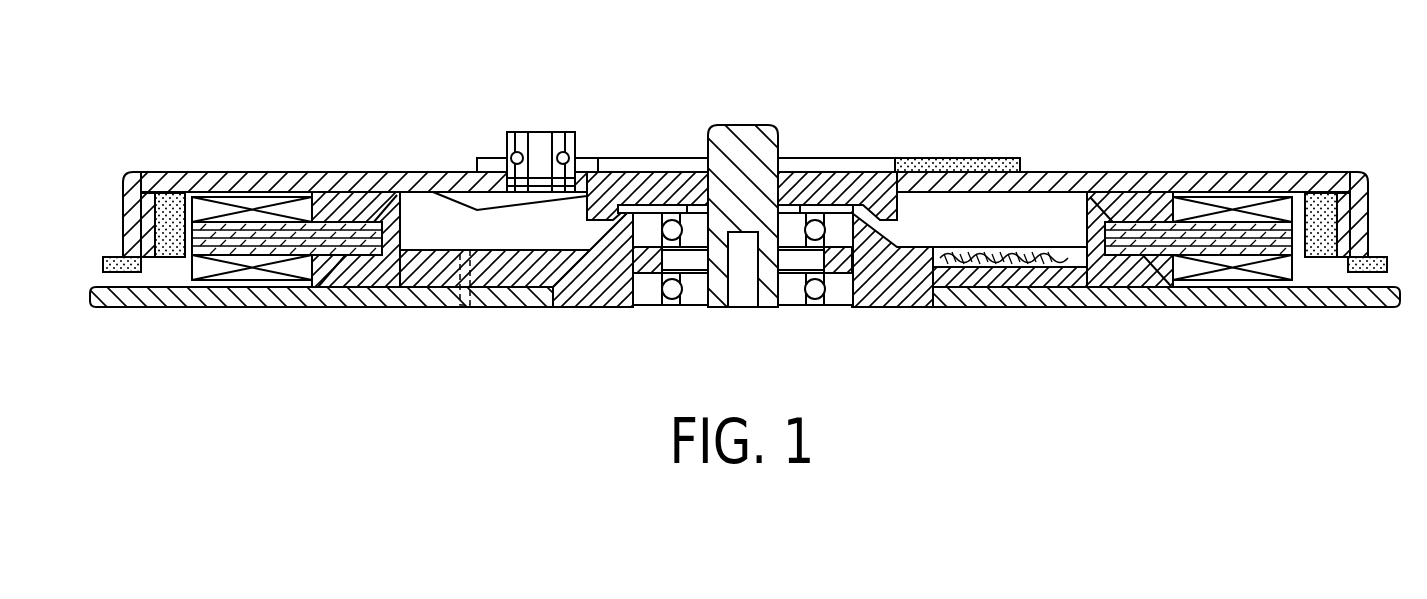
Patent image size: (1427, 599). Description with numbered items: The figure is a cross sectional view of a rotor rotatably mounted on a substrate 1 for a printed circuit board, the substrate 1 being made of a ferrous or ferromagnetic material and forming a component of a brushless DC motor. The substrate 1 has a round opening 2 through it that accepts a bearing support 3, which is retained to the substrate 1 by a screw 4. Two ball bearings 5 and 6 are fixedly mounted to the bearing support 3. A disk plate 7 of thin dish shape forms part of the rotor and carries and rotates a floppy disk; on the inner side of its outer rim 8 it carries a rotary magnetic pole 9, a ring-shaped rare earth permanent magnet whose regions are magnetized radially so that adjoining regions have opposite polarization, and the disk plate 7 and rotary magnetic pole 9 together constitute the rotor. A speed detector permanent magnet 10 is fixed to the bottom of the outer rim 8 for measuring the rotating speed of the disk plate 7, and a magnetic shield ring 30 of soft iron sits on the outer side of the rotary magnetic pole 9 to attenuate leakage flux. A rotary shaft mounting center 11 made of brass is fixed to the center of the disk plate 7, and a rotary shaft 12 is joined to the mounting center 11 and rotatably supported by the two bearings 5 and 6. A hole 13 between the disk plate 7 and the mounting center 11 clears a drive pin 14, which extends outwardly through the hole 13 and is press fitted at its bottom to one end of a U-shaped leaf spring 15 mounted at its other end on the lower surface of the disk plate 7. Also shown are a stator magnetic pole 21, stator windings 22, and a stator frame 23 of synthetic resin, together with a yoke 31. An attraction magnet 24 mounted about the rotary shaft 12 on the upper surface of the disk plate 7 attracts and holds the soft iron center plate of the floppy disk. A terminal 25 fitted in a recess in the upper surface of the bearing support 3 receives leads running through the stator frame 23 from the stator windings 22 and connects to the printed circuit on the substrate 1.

The substrate 1 is at (1157, 292).
The round opening 2 is at (940, 289).
The bearing support 3 is at (595, 290).
The screw 4 is at (452, 306).
The ball bearing 5 is at (792, 293).
The ball bearing 6 is at (833, 217).
The disk plate 7 is at (1077, 182).
The outer rim 8 is at (1370, 190).
The rotary magnetic pole 9 is at (170, 197).
The speed detector permanent magnet 10 is at (1367, 268).
The rotary shaft mounting center 11 is at (643, 180).
The rotary shaft 12 is at (743, 135).
The hole 13 is at (510, 180).
The drive pin 14 is at (540, 140).
The leaf spring 15 is at (447, 185).
The stator magnetic pole 21 is at (252, 230).
The stator windings 22 is at (257, 200).
The stator frame 23 is at (355, 290).
The attraction magnet 24 is at (968, 163).
The terminal 25 is at (1035, 275).
The magnetic shield ring 30 is at (143, 218).
The yoke 31 is at (347, 227).